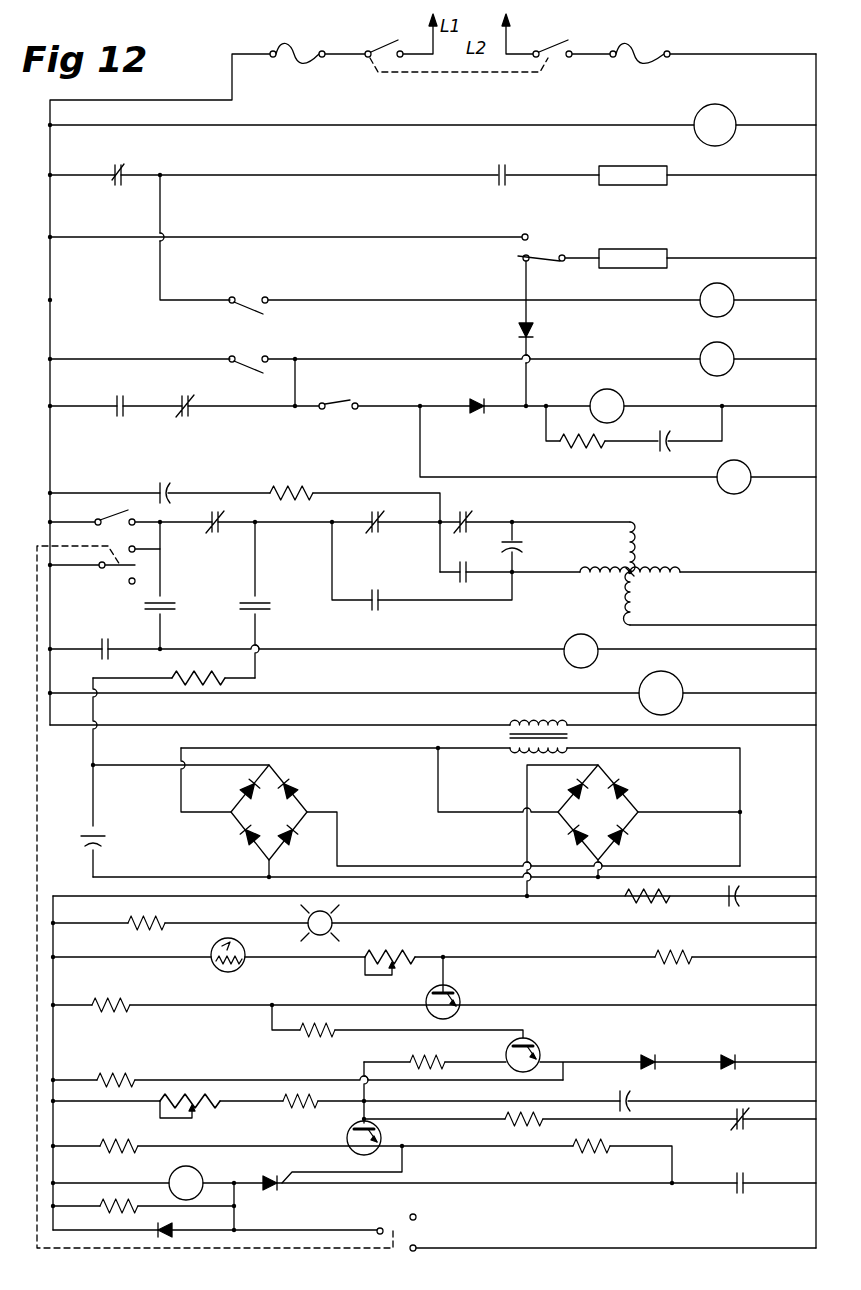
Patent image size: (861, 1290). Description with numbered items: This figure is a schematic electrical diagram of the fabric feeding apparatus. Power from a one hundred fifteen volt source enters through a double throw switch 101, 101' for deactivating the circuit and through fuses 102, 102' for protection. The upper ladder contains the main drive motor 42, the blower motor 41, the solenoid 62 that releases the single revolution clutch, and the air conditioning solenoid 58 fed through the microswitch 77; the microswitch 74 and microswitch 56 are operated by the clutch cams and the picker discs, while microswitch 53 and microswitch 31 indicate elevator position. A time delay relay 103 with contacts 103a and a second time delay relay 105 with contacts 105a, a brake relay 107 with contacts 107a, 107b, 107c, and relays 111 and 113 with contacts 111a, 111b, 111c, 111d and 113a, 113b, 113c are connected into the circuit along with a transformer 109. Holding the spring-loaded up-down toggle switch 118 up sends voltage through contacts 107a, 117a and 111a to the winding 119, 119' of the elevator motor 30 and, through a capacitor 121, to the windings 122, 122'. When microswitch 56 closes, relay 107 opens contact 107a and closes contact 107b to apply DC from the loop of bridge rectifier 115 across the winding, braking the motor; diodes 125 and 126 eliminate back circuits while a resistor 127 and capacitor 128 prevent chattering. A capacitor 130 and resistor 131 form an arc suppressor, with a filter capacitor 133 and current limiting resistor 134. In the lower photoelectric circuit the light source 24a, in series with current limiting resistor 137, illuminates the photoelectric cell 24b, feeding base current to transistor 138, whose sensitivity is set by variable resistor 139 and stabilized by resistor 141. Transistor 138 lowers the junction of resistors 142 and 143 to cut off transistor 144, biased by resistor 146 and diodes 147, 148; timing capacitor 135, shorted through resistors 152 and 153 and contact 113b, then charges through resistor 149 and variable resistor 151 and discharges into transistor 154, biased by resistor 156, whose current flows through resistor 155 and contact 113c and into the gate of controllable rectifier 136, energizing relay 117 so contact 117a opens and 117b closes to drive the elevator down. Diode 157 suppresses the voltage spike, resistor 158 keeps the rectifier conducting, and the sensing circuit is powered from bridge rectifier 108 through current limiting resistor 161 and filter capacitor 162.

The fuse 102 is at (297, 42).
The double throw switch 101 is at (372, 39).
The double throw switch 101' is at (555, 36).
The fuse 102' is at (640, 39).
The main drive motor 42 is at (730, 110).
The solenoid 62 is at (622, 166).
The contacts 105a is at (507, 166).
The contact 111d is at (126, 168).
The microswitch 77 is at (555, 254).
The air conditioning solenoid 58 is at (640, 249).
The microswitch 56 is at (233, 297).
The second time delay relay 105 is at (728, 288).
The microswitch 74 is at (231, 355).
The diode 126 is at (518, 330).
The relay 111 is at (730, 345).
The contact 111c is at (113, 397).
The contacts 103a is at (180, 397).
The microswitch 53 is at (321, 403).
The diode 125 is at (498, 388).
The brake relay 107 is at (606, 392).
The resistor 127 is at (592, 452).
The capacitor 128 is at (668, 446).
The time delay relay 103 is at (746, 462).
The capacitor 130 is at (172, 480).
The resistor 131 is at (296, 480).
The microswitch 31 is at (96, 518).
The contact 107a is at (222, 518).
The contact 117a is at (382, 517).
The contact 111a is at (471, 512).
The capacitor 121 is at (522, 543).
The winding 119 is at (657, 545).
The elevator motor 30 is at (636, 568).
The winding 122 is at (592, 583).
The winding 122' is at (674, 581).
The winding 119' is at (658, 599).
The contact 117b is at (382, 596).
The contact 111b is at (469, 578).
The up-down toggle switch 118 is at (100, 570).
The contact 113a is at (168, 604).
The contact 107b is at (258, 622).
The contact 107c is at (109, 656).
The current limiting resistor 134 is at (194, 676).
The relay 113 is at (570, 640).
The blower motor 41 is at (675, 680).
The transformer 109 is at (544, 722).
The bridge rectifier 115 is at (279, 782).
The bridge rectifier 108 is at (630, 803).
The filter capacitor 133 is at (84, 832).
The current limiting resistor 137 is at (160, 918).
The light source 24a is at (334, 917).
The photoelectric cell 24b is at (244, 966).
The variable resistor 139 is at (414, 955).
The resistor 141 is at (690, 956).
The resistor 142 is at (112, 1000).
The transistor 138 is at (461, 998).
The resistor 143 is at (324, 1036).
The transistor 144 is at (535, 1044).
The diode 147 is at (655, 1060).
The diode 148 is at (734, 1060).
The resistor 146 is at (124, 1072).
The resistor 152 is at (436, 1058).
The current limiting resistor 161 is at (630, 904).
The filter capacitor 162 is at (740, 904).
The resistor 156 is at (118, 1138).
The variable resistor 151 is at (204, 1112).
The resistor 149 is at (312, 1114).
The transistor 154 is at (381, 1136).
The resistor 153 is at (508, 1126).
The timing capacitor 135 is at (632, 1102).
The contact 113b is at (738, 1126).
The resistor 155 is at (592, 1156).
The contact 113c is at (744, 1178).
The relay 117 is at (170, 1172).
The resistor 158 is at (112, 1204).
The diode 157 is at (170, 1228).
The controllable rectifier 136 is at (272, 1192).